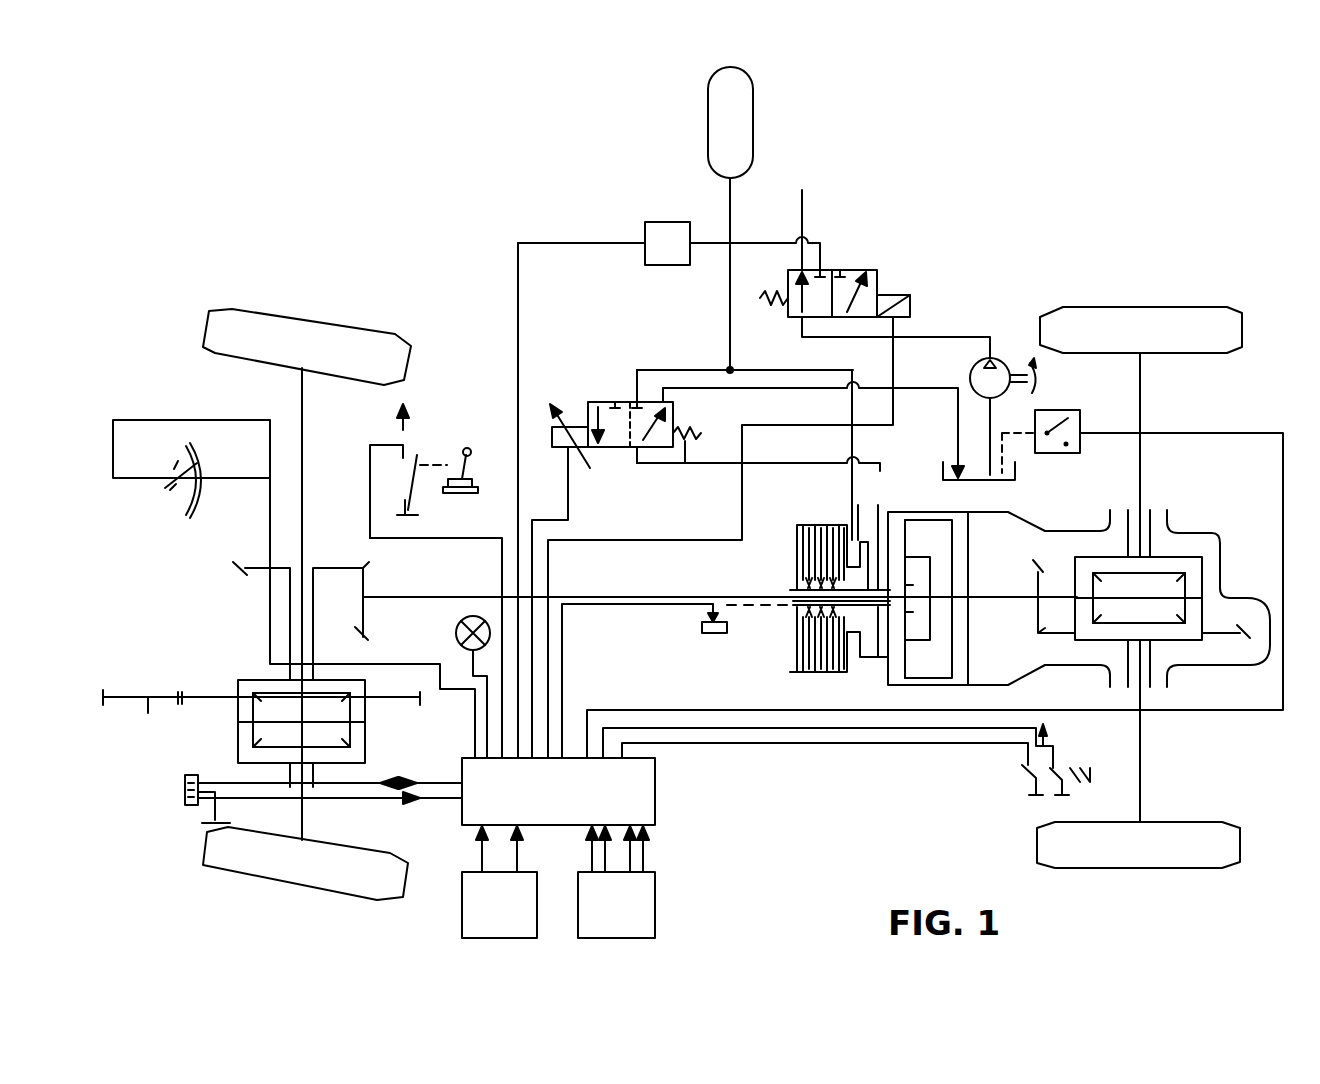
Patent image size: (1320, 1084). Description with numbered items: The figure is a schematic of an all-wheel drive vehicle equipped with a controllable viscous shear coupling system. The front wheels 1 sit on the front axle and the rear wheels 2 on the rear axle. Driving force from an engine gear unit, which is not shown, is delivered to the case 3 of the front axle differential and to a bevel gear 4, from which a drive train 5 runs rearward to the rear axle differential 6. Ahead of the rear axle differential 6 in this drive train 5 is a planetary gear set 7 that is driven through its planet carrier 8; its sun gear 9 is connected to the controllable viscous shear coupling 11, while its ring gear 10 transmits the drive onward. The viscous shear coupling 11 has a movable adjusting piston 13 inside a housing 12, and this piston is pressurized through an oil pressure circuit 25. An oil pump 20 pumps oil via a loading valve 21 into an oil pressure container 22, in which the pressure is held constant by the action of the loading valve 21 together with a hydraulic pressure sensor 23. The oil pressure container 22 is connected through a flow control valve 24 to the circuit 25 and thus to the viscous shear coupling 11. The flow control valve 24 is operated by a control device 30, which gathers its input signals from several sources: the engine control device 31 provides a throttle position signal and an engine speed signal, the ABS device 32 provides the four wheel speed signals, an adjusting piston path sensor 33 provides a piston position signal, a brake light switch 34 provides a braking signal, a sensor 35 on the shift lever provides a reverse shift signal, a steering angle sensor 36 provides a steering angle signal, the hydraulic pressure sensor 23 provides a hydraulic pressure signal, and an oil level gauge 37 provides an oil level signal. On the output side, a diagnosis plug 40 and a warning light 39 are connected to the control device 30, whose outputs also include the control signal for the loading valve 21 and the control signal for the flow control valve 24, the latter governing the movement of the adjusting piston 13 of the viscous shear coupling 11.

The front wheels 1 is at (218, 324).
The rear wheels 2 is at (1205, 325).
The case of front axle differential 3 is at (240, 682).
The bevel gear 4 is at (330, 567).
The drive train 5 is at (460, 597).
The rear axle differential 6 is at (1180, 565).
The planetary gear set 7 is at (948, 687).
The planet carrier 8 is at (953, 642).
The sun gear 9 is at (908, 586).
The ring gear 10 is at (928, 687).
The viscous shear coupling 11 is at (797, 670).
The housing 12 is at (927, 512).
The adjusting piston 13 is at (870, 552).
The oil pump 20 is at (1000, 375).
The loading valve 21 is at (850, 285).
The oil pressure container 22 is at (718, 125).
The hydraulic pressure sensor 23 is at (668, 228).
The flow control valve 24 is at (610, 412).
The oil pressure circuit 25 is at (712, 462).
The control device 30 is at (462, 762).
The engine control device 31 is at (462, 905).
The ABS device 32 is at (650, 903).
The adjusting piston path sensor 33 is at (707, 635).
The brake light switch 34 is at (1093, 762).
The sensor on shift lever 35 is at (402, 440).
The steering angle sensor 36 is at (180, 472).
The oil level gauge 37 is at (1085, 425).
The warning light 39 is at (456, 633).
The diagnosis plug 40 is at (185, 790).